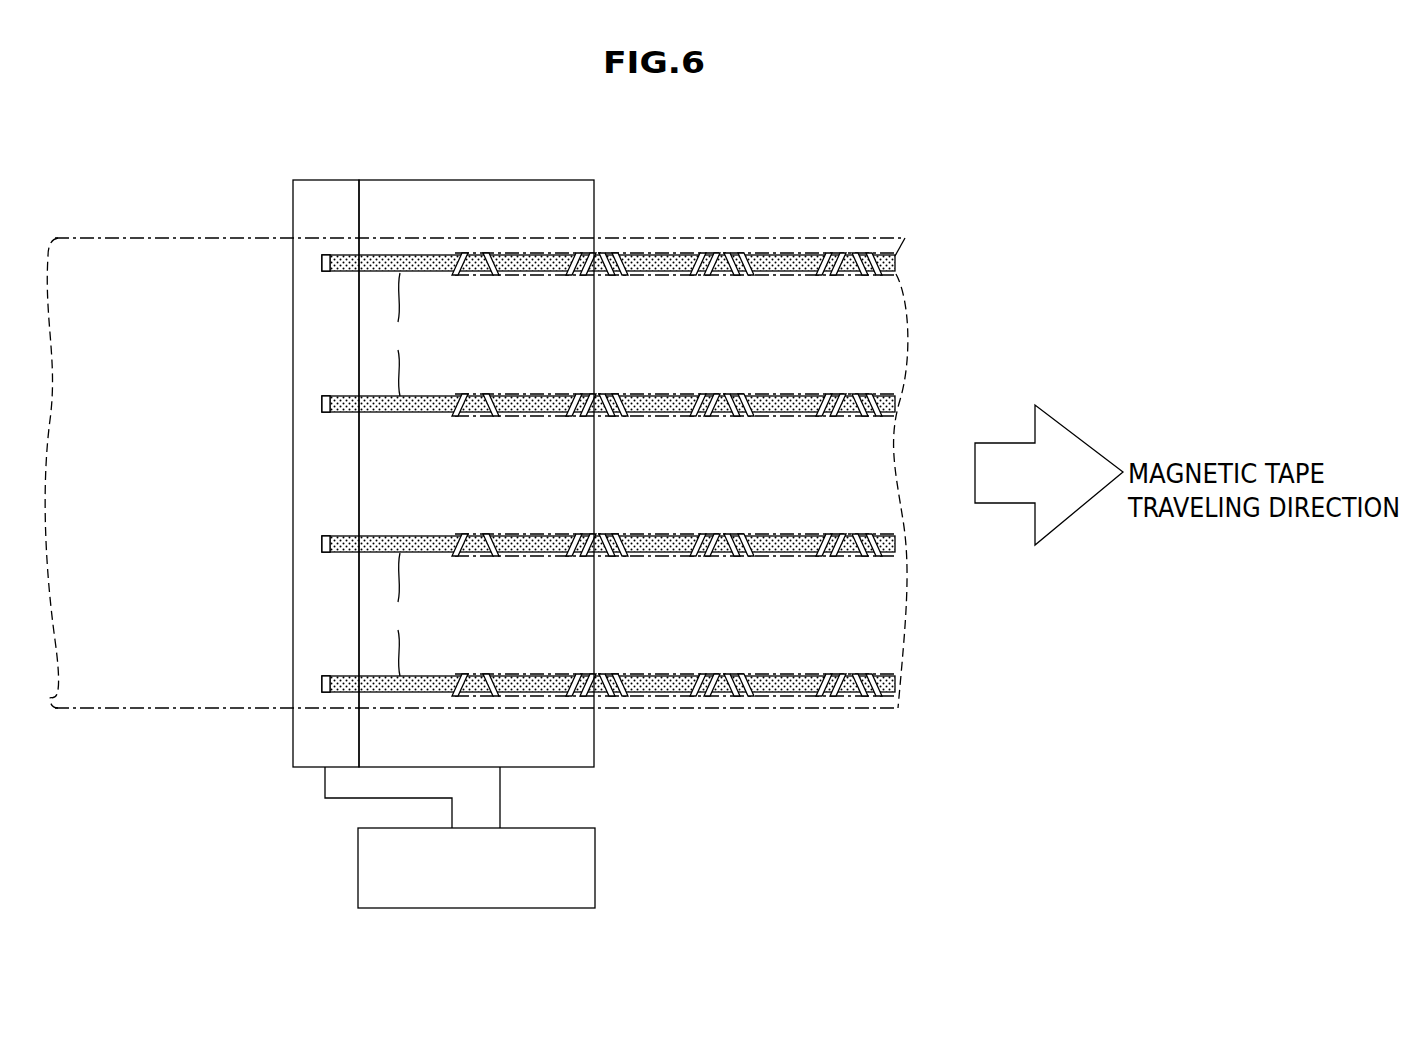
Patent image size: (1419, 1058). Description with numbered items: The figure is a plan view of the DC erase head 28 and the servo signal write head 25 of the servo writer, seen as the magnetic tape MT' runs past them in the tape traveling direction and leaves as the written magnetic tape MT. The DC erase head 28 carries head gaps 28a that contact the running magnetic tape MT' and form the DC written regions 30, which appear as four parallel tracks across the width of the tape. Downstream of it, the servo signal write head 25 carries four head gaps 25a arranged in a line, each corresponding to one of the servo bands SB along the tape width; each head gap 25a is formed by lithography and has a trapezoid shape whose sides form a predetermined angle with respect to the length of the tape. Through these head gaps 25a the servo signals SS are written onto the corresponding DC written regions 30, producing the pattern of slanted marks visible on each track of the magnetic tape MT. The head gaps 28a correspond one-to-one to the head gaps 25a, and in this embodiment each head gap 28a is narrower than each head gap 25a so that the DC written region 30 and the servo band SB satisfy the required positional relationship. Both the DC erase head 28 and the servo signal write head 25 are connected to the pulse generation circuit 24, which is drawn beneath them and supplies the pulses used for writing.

The pulse generation circuit 24 is at (595, 854).
The servo signal write head 25 is at (594, 740).
The head gap 25a is at (459, 258).
The DC erase head 28 is at (293, 742).
The head gap 28a is at (322, 256).
The DC written region 30 is at (404, 474).
The servo signal SS is at (906, 270).
The servo band SB is at (785, 274).
The magnetic tape MT is at (535, 420).
The magnetic tape MT' is at (138, 421).